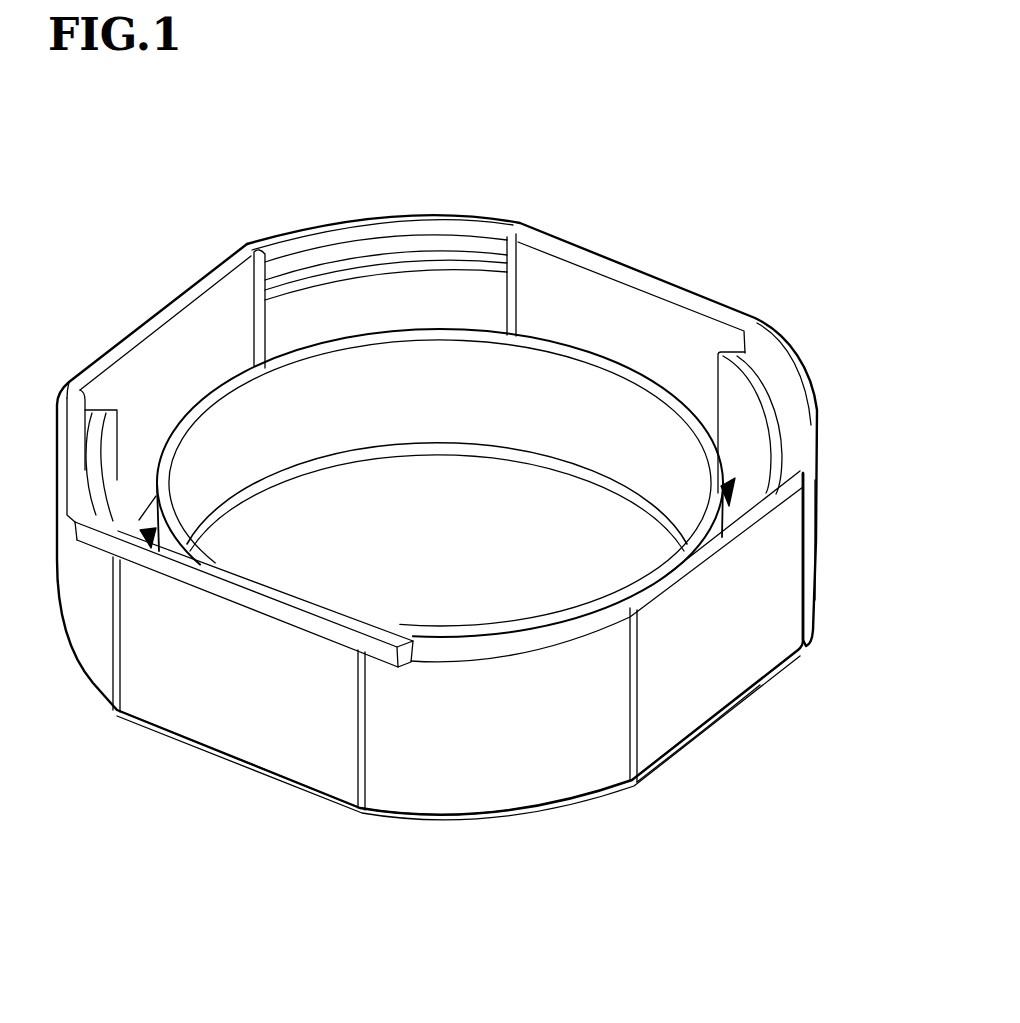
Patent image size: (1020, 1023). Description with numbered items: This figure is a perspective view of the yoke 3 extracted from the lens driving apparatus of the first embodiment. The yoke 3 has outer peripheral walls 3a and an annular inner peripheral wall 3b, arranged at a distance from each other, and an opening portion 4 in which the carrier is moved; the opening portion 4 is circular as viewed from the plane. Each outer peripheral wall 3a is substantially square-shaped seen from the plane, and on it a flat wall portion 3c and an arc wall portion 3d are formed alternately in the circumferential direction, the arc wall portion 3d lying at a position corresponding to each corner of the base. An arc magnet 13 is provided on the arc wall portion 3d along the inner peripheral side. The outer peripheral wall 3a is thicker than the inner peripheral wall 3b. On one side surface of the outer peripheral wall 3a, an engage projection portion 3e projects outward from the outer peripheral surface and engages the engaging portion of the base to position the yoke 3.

The yoke 3 is at (437, 517).
The outer peripheral wall 3a is at (725, 645).
The inner peripheral wall 3b is at (537, 363).
The flat wall portion 3c is at (675, 717).
The arc wall portion 3d is at (570, 763).
The engage projection portion 3e is at (277, 607).
The opening portion 4 is at (603, 541).
The arc magnet 13 is at (408, 296).